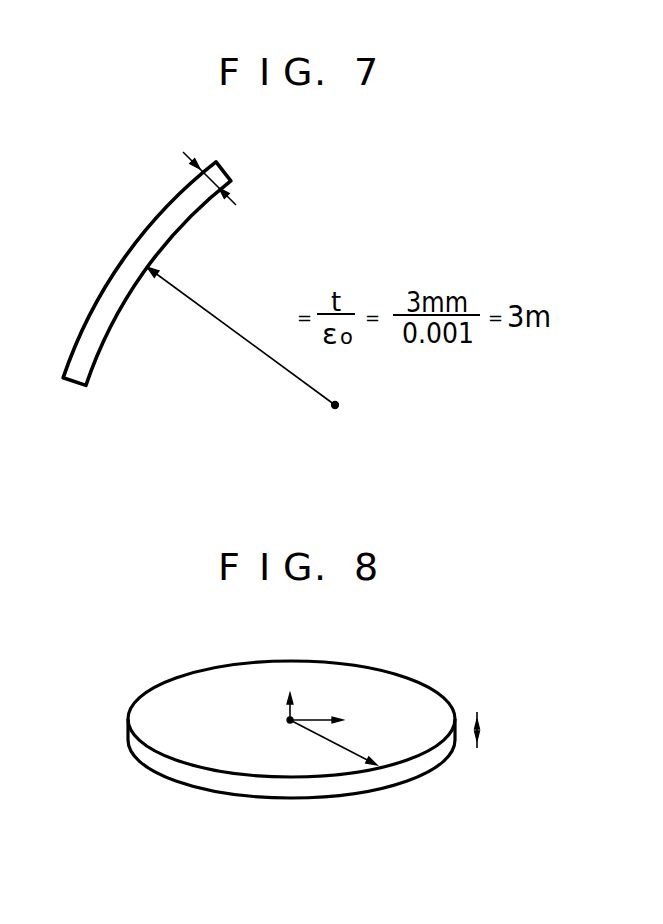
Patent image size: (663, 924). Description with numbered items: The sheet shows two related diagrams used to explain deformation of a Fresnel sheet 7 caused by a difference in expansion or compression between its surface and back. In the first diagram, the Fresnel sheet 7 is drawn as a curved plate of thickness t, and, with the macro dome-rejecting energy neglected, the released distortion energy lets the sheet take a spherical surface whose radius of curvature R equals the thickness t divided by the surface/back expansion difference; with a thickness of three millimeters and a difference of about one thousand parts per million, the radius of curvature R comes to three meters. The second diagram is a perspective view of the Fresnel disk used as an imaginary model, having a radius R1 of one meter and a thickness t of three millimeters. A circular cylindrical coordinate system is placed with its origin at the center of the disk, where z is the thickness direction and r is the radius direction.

In FIG. 7, the Fresnel sheet 7 is at (233, 179).
In FIG. 7, the thickness t is at (217, 190).
In FIG. 8, the thickness t is at (484, 732).
In FIG. 7, the radius of curvature R is at (243, 338).
In FIG. 8, the radius R1 is at (333, 745).
In FIG. 8, the thickness direction z is at (299, 697).
In FIG. 8, the radius direction r is at (326, 719).